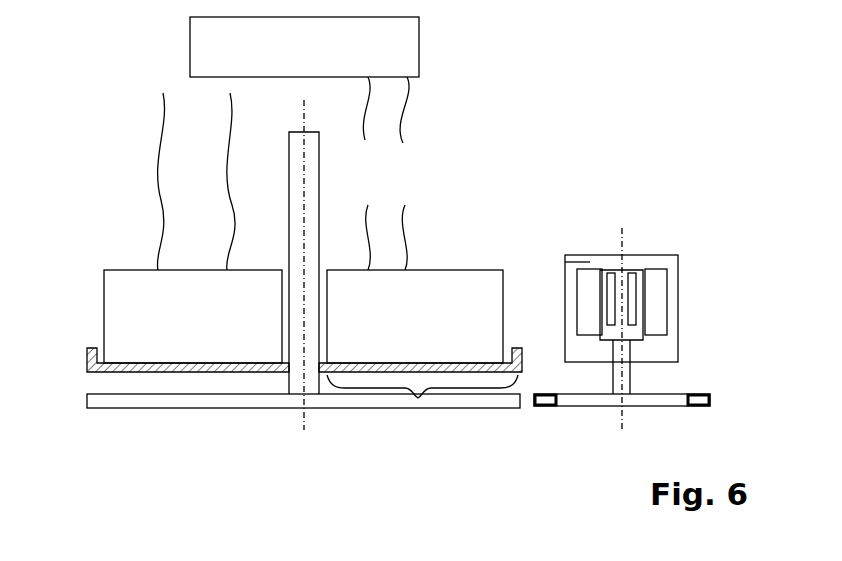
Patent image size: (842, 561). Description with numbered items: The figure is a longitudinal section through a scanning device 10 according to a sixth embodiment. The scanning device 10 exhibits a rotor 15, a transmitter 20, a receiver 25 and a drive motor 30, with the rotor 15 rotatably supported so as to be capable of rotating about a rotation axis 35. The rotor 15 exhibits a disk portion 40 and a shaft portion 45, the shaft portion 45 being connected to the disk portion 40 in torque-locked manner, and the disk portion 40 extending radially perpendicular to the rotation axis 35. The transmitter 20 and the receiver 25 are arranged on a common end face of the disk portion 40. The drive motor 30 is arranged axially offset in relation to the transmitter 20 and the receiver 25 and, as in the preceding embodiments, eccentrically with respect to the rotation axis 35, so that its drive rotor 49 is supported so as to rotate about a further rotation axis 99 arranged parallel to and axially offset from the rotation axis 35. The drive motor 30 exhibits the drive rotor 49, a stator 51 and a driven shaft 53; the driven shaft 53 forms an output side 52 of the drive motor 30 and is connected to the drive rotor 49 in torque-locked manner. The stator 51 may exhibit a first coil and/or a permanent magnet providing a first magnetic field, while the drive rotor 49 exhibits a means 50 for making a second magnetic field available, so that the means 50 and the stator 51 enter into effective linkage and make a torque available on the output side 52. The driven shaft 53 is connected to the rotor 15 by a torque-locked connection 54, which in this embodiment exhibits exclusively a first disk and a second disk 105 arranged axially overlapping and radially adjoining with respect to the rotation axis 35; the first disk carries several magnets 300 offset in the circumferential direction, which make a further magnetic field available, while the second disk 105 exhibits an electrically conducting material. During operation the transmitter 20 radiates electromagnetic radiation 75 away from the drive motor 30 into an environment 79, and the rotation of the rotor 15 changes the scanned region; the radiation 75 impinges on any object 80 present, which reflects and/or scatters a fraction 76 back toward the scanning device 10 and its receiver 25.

The scanning device 10 is at (494, 121).
The rotor 15 is at (157, 372).
The transmitter 20 is at (202, 287).
The receiver 25 is at (463, 285).
The drive motor 30 is at (678, 286).
The rotation axis 35 is at (300, 122).
The disk portion 40 is at (418, 398).
The shaft portion 45 is at (319, 176).
The drive rotor 49 is at (600, 272).
The means for making a second magnetic field available 50 is at (607, 270).
The stator 51 is at (583, 300).
The output side 52 is at (609, 373).
The driven shaft 53 is at (632, 372).
The torque-locked connection 54 is at (387, 427).
The electromagnetic radiation 75 is at (235, 117).
The fraction of the electromagnetic radiation 76 is at (407, 220).
The environment 79 is at (461, 155).
The object 80 is at (190, 50).
The further rotation axis 99 is at (622, 242).
The second disk 105 is at (258, 408).
The magnets 300 is at (545, 407).